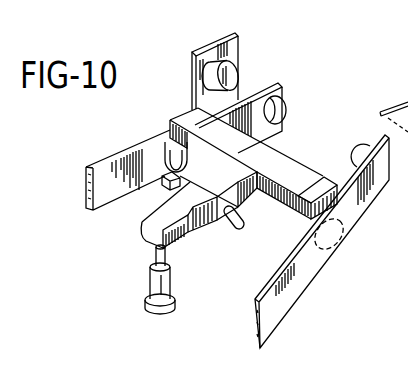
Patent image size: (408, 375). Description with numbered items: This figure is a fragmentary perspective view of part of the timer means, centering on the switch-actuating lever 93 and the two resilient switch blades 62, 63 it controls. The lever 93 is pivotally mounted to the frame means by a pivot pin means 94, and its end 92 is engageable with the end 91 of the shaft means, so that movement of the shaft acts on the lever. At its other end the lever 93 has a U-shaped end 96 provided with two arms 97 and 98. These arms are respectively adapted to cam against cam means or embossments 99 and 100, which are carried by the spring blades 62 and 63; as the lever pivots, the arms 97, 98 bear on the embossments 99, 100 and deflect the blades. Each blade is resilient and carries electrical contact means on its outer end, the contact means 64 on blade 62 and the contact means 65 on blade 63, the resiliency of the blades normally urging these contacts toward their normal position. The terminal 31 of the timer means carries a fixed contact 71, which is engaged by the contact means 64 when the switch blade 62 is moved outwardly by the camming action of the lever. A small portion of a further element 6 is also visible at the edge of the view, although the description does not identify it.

The plate 6 is at (390, 100).
The terminal 31 is at (223, 42).
The fixed contact 71 is at (237, 74).
The electrical contact means 64 is at (260, 86).
The arm 97 is at (185, 118).
The cam means or embossment 99 is at (168, 152).
The resilient switch blade 62 is at (113, 167).
The U-shaped end 96 is at (247, 159).
The arm 98 is at (323, 183).
The electrical contact means 65 is at (359, 152).
The resilient switch blade 63 is at (307, 276).
The cam means or embossment 100 is at (314, 220).
The end of lever 92 is at (139, 228).
The lever 93 is at (237, 203).
The pivot pin means 94 is at (233, 228).
The end of shaft means 91 is at (155, 250).